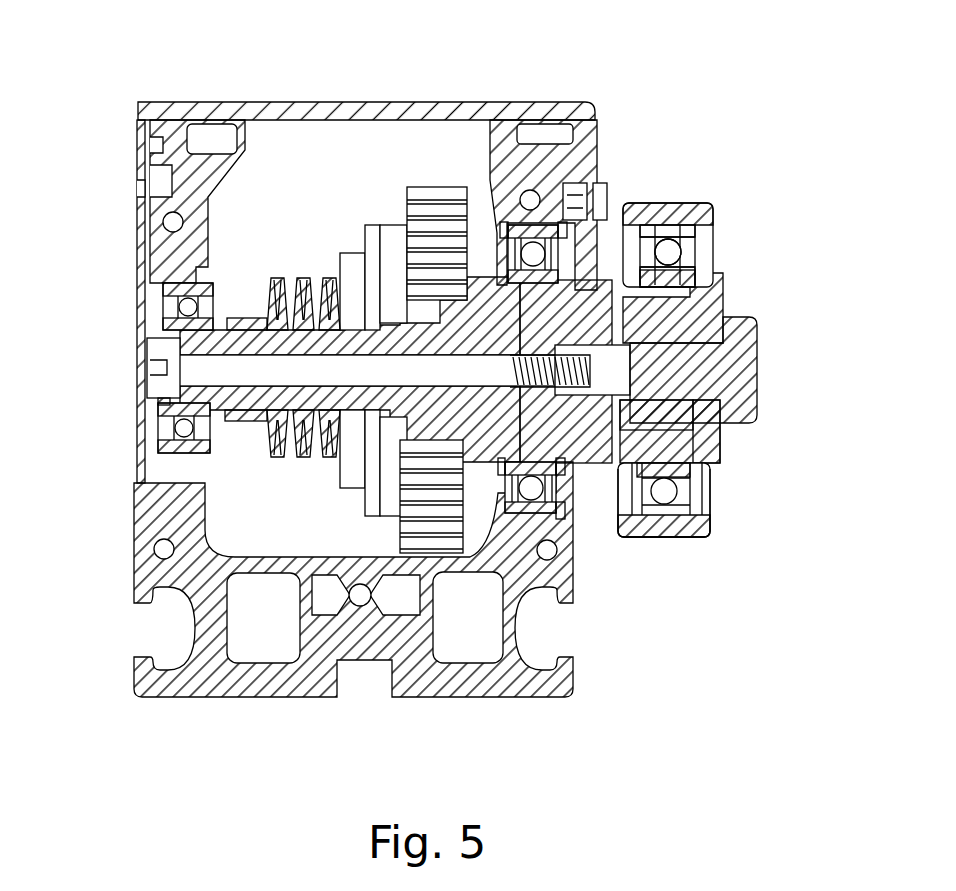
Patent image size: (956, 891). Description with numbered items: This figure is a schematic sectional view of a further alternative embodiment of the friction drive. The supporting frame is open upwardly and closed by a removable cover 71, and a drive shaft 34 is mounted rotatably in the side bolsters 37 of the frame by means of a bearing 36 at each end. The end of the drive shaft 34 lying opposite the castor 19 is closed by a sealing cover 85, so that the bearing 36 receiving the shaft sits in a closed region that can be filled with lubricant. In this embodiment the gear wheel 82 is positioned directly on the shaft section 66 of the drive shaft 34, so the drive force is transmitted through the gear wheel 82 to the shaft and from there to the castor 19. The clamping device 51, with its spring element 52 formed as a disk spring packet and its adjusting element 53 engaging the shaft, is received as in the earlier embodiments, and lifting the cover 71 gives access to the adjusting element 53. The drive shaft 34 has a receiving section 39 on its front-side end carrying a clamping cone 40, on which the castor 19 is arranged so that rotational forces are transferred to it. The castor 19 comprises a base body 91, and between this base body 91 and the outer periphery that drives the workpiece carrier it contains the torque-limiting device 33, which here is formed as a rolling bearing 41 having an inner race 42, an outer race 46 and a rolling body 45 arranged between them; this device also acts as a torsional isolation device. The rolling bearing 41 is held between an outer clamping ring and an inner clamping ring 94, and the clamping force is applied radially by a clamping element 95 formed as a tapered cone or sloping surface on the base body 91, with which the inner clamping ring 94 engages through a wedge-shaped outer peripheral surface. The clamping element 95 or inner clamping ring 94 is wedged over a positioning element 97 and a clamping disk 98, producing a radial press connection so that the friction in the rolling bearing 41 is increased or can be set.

The cover 71 is at (230, 118).
The gear wheel 82 is at (440, 187).
The castor 19 is at (690, 158).
The clamping device 51 is at (258, 226).
The spring element 52 is at (335, 276).
The adjusting element 53 is at (245, 318).
The sealing cover 85 is at (146, 290).
The drive shaft 34 is at (142, 376).
The shaft section 66 is at (162, 406).
The bearing 36 is at (181, 430).
The side bolster 37 is at (182, 510).
The torque-limiting device 33 is at (700, 216).
The outer race 46 is at (690, 236).
The rolling body 45 is at (672, 251).
The inner race 42 is at (700, 272).
The clamping disk 98 is at (720, 322).
The positioning element 97 is at (730, 356).
The clamping cone 40 is at (665, 394).
The base body 91 is at (700, 406).
The clamping element 95 is at (690, 436).
The inner clamping ring 94 is at (715, 456).
The receiving section 39 is at (612, 472).
The rolling bearing 41 is at (716, 506).